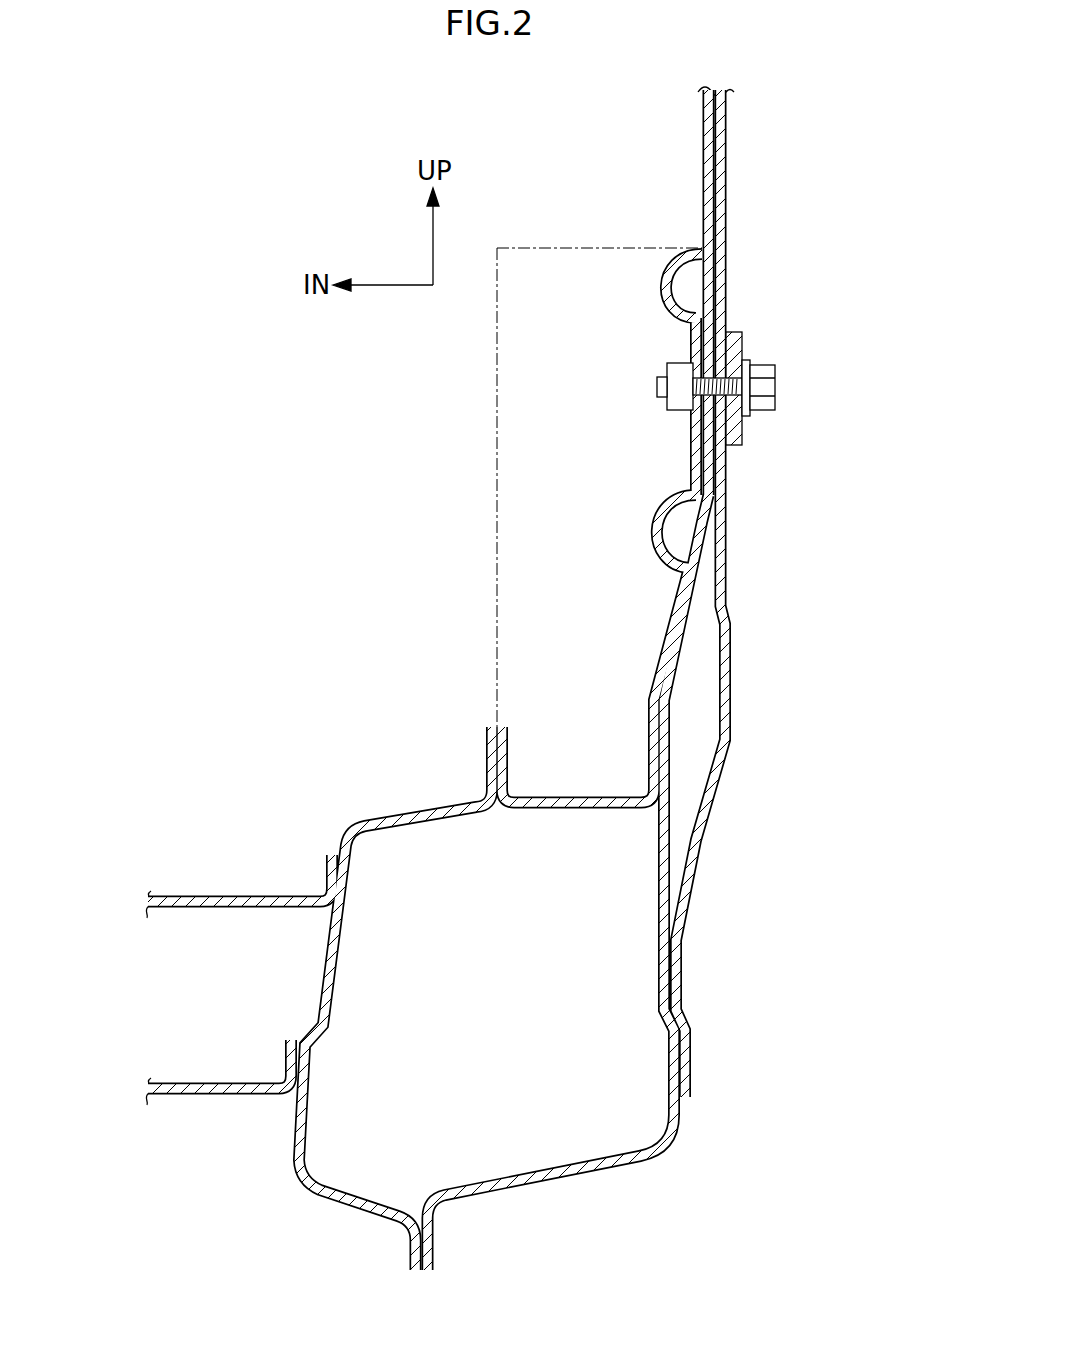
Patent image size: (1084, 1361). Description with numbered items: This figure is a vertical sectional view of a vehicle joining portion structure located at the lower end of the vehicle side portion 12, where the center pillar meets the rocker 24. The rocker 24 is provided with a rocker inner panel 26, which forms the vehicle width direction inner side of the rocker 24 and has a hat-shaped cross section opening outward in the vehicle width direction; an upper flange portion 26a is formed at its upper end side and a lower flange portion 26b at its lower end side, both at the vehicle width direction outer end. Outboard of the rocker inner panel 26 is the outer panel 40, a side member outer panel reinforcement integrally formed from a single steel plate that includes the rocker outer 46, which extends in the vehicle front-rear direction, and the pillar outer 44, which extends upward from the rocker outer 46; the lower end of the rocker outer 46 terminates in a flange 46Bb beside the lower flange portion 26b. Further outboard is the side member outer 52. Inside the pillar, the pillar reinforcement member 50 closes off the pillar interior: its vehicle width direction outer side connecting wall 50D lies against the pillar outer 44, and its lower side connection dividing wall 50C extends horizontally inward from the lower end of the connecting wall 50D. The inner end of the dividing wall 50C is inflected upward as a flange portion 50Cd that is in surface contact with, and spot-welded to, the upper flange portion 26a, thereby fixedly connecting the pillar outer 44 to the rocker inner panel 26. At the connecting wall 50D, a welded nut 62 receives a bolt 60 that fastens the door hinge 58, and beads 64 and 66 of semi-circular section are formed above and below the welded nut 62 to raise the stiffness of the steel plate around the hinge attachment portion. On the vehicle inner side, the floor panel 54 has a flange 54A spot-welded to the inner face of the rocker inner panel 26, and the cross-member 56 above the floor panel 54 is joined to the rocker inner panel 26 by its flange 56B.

The vehicle side portion 12 is at (746, 152).
The rocker 24 is at (399, 1002).
The rocker inner panel 26 is at (395, 1002).
The upper flange portion 26a is at (485, 742).
The lower flange portion 26b is at (405, 1252).
The outer panel 40 is at (568, 900).
The pillar outer 44 is at (655, 848).
The rocker outer 46 is at (551, 1192).
The lower flange of second member 46Bb is at (432, 1252).
The pillar reinforcement member 50 is at (599, 553).
The lower side connection dividing wall 50C is at (588, 795).
The flange portion 50Cd is at (510, 745).
The vehicle width direction outer side connecting wall 50D is at (692, 441).
The side member outer 52 is at (732, 745).
The floor panel 54 is at (218, 1046).
The flange 54A is at (288, 1050).
The cross-member 56 is at (239, 852).
The flanges 56B is at (328, 860).
The door hinge 58 is at (733, 335).
The bolts 60 is at (778, 384).
The welded nuts 62 is at (684, 362).
The bead 64 is at (662, 283).
The bead 66 is at (653, 527).